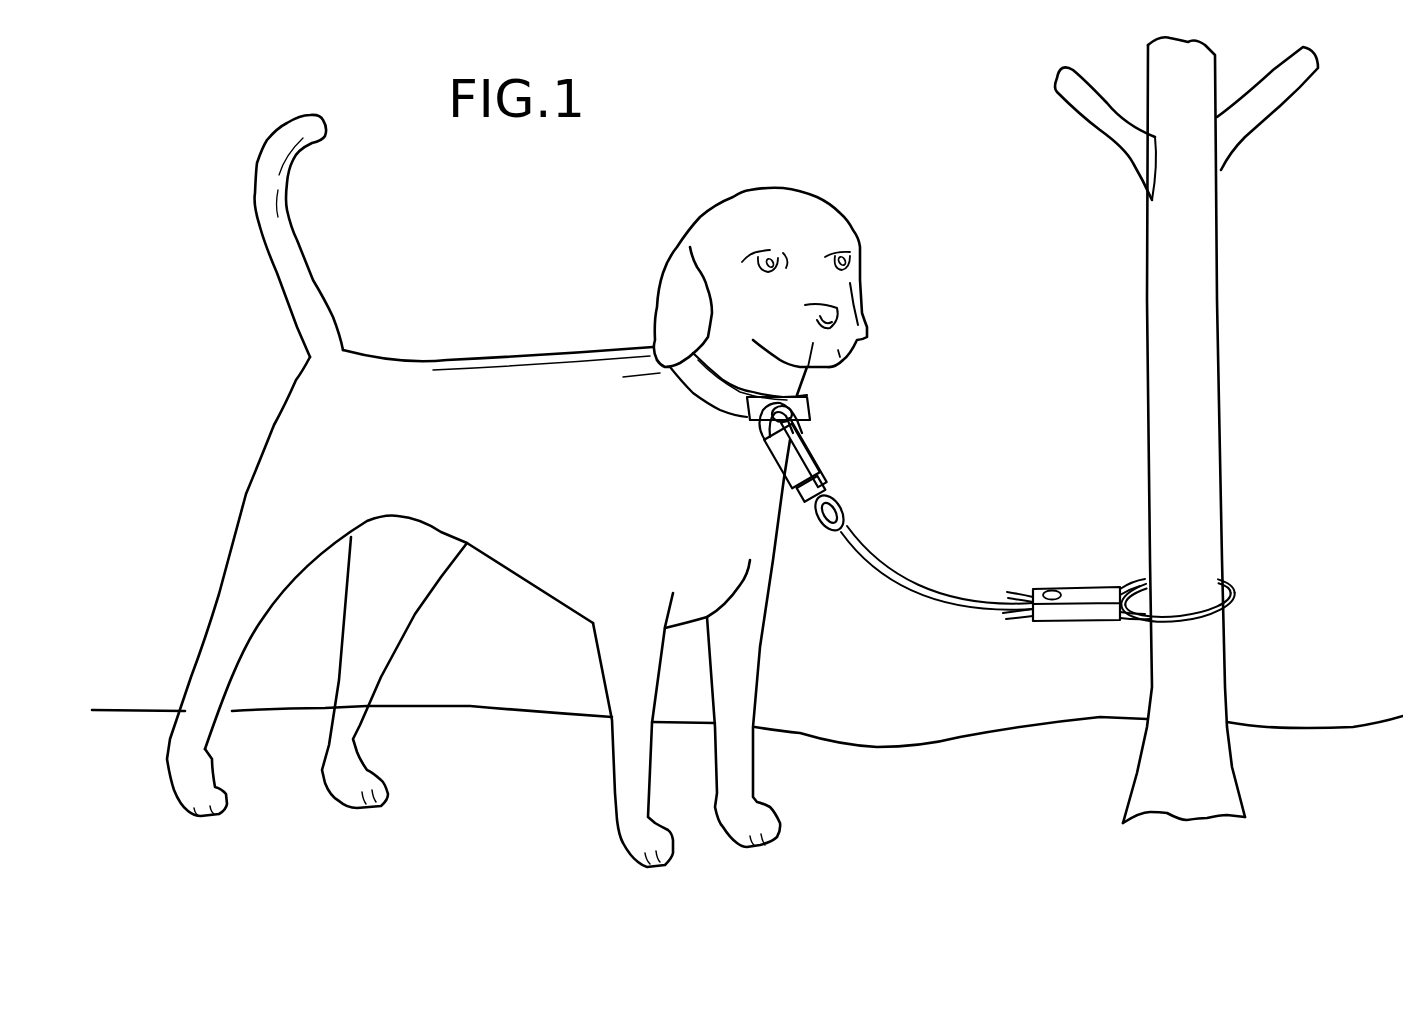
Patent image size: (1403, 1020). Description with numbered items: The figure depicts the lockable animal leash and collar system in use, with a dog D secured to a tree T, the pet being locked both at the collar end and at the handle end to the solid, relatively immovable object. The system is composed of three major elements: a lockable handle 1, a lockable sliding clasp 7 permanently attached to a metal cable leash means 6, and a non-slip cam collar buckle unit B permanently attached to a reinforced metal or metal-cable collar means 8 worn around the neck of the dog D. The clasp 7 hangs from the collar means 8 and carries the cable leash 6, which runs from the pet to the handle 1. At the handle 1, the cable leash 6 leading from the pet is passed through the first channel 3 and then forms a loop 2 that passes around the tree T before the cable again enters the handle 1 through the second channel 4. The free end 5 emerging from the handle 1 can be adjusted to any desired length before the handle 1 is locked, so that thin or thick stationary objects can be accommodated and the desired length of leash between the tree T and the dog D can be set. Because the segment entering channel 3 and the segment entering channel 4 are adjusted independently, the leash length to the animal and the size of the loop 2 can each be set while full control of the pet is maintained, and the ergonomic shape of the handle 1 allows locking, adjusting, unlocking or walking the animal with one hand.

The lockable handle 1 is at (1073, 593).
The loop 2 is at (1216, 611).
The first channel 3 is at (1020, 613).
The second channel 4 is at (1126, 582).
The free end 5 is at (1022, 590).
The metal cable leash means 6 is at (903, 577).
The lockable sliding clasp 7 is at (803, 457).
The collar means 8 is at (720, 398).
The non-slip cam collar buckle unit B is at (808, 393).
The dog D is at (517, 491).
The tree T is at (1215, 436).